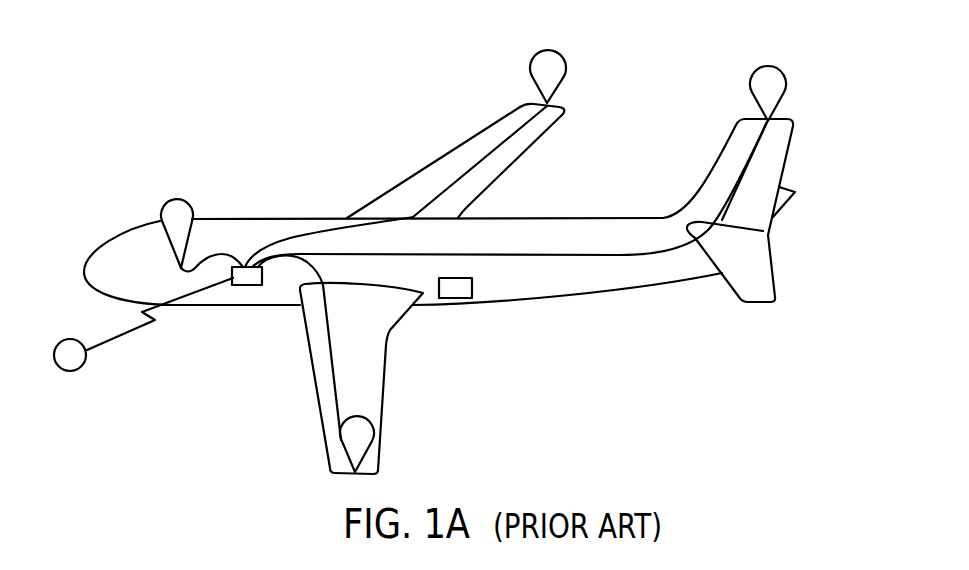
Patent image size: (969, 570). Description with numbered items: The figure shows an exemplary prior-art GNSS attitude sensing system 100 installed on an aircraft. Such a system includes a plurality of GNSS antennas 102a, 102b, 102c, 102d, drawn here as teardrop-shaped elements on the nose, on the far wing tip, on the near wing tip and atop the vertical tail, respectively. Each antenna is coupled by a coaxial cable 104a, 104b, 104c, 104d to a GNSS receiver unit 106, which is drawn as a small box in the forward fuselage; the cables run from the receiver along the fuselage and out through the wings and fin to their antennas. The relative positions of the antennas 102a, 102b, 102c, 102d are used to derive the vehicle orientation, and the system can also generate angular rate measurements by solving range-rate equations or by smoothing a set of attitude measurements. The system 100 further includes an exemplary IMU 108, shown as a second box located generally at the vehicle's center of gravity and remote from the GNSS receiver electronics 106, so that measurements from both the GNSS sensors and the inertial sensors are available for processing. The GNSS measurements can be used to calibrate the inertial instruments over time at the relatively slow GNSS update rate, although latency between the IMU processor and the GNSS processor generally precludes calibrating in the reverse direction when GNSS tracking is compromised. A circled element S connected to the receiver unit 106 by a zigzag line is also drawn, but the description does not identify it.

The GNSS attitude sensing system 100 is at (269, 107).
The GNSS antenna 102a is at (176, 199).
The GNSS antenna 102b is at (562, 55).
The GNSS antenna 102c is at (372, 428).
The GNSS antenna 102d is at (773, 66).
The coaxial cable 104a is at (207, 260).
The coaxial cable 104b is at (461, 177).
The coaxial cable 104c is at (335, 378).
The coaxial cable 104d is at (537, 254).
The GNSS receiver unit 106 is at (250, 286).
The IMU 108 is at (453, 294).
The signal source S is at (143, 324).